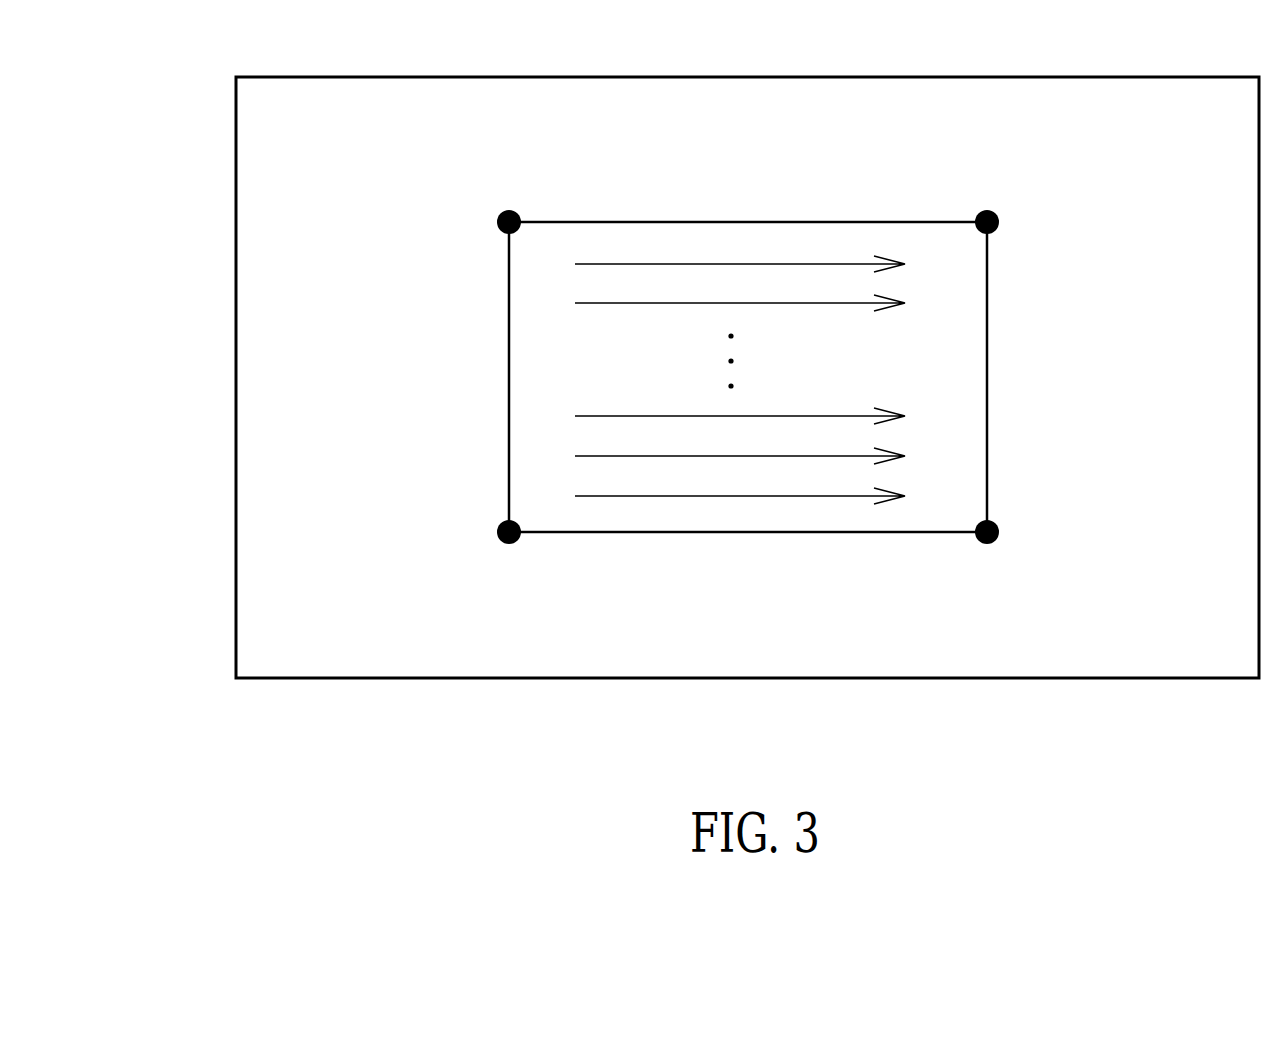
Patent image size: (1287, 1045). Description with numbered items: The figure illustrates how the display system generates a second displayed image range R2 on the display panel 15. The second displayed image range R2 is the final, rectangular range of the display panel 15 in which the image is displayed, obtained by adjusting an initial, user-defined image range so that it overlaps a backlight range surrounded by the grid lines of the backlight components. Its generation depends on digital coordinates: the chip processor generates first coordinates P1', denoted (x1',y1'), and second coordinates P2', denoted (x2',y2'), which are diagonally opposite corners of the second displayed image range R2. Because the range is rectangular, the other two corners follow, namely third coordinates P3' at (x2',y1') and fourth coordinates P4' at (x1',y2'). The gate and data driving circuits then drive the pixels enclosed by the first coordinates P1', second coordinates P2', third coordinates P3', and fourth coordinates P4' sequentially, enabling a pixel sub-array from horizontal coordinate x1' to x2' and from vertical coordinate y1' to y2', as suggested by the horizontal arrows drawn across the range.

The display panel 15 is at (1185, 76).
The second displayed image range R2 is at (988, 342).
The first coordinates P1' is at (471, 201).
The second coordinates P2' is at (1019, 554).
The third coordinates P3' is at (1019, 201).
The fourth coordinates P4' is at (471, 554).